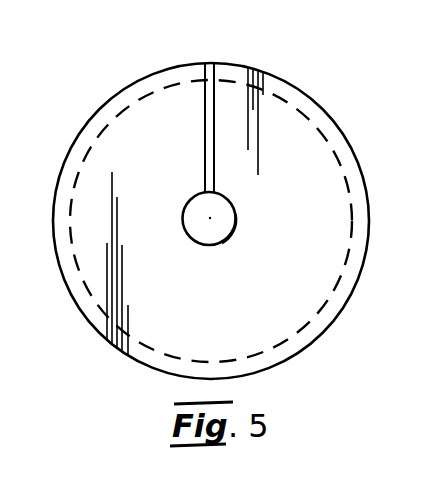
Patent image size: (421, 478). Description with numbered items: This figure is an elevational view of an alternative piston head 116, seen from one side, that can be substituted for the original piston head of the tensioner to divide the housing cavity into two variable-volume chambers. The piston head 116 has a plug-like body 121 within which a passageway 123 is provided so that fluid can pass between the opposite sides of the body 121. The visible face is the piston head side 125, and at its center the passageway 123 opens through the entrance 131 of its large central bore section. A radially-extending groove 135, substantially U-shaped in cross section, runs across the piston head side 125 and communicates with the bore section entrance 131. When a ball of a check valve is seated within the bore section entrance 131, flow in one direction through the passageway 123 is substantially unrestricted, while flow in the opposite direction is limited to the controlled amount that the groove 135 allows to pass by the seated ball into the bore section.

The piston head 116 is at (305, 361).
The plug-like body 121 is at (98, 330).
The passageway 123 is at (191, 233).
The piston head side 125 is at (272, 128).
The bore section entrance 131 is at (225, 210).
The radially-extending groove 135 is at (209, 75).